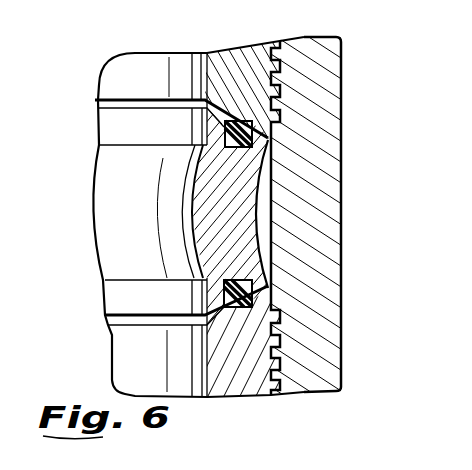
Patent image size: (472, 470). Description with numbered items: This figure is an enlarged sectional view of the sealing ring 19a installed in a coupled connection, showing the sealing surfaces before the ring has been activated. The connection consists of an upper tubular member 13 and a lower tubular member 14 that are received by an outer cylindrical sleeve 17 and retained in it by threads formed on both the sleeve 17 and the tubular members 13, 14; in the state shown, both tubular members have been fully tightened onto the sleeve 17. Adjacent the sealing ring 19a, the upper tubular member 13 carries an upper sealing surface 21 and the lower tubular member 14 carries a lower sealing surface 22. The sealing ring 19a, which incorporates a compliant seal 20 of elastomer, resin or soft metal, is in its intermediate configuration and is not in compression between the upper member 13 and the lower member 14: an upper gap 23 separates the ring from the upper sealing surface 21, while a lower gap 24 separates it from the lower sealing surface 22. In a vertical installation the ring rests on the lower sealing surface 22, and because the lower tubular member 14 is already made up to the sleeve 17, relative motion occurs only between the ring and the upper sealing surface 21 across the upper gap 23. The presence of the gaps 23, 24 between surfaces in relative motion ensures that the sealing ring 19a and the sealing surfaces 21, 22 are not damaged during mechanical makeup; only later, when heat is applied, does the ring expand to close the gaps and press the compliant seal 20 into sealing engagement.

The upper tubular member 13 is at (230, 48).
The lower tubular member 14 is at (249, 382).
The outer cylindrical sleeve 17 is at (333, 83).
The sealing ring 19a is at (258, 200).
The compliant seal 20 is at (222, 128).
The upper sealing surface 21 is at (105, 104).
The lower sealing surface 22 is at (112, 322).
The upper gap 23 is at (262, 143).
The lower gap 24 is at (264, 288).